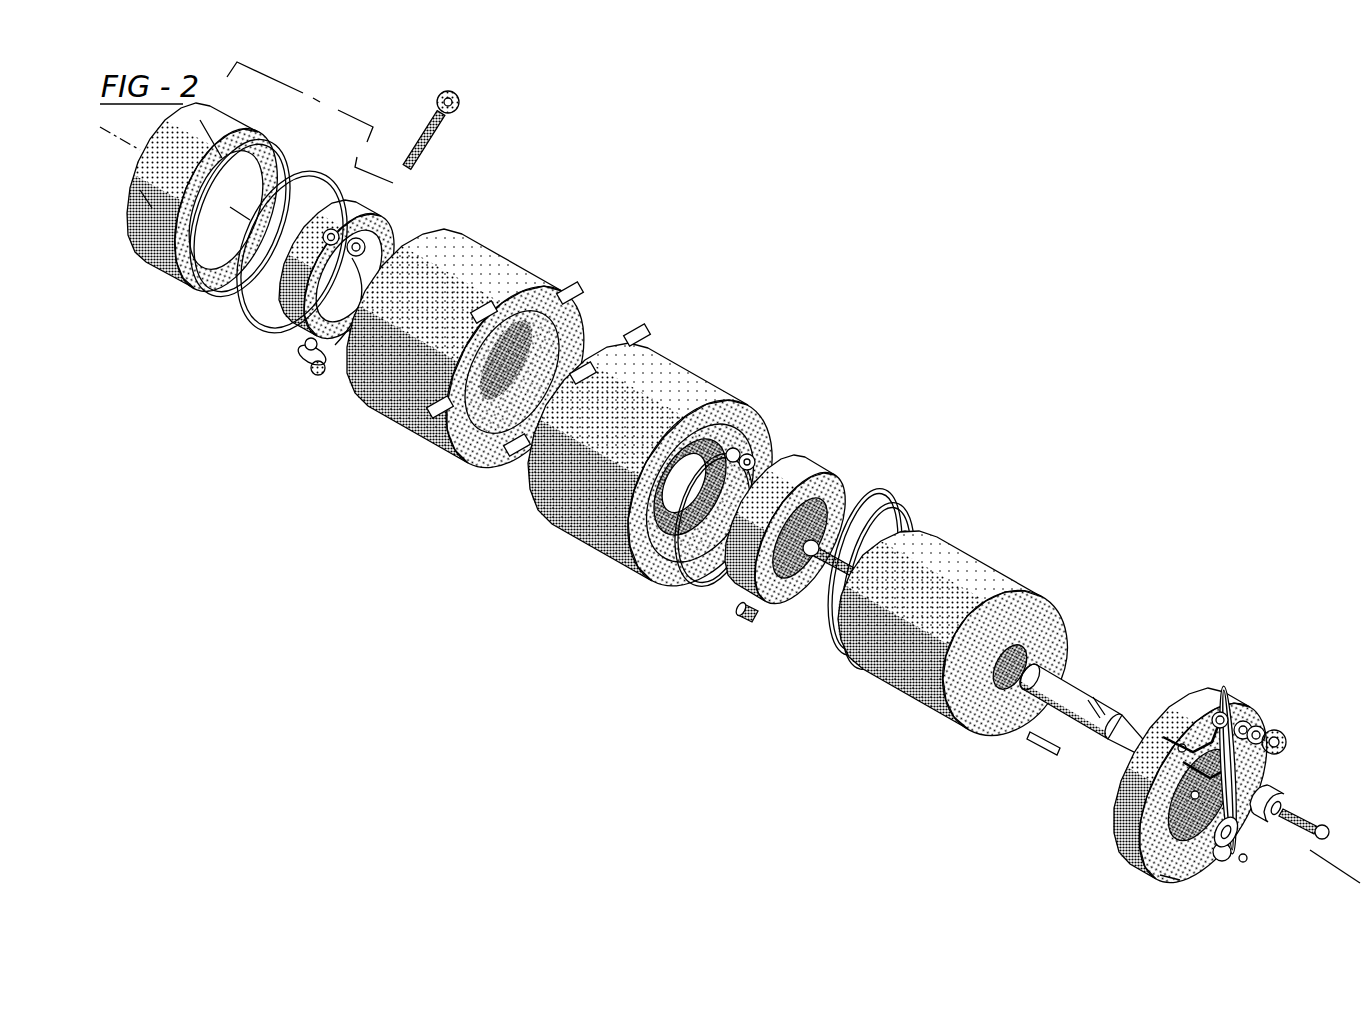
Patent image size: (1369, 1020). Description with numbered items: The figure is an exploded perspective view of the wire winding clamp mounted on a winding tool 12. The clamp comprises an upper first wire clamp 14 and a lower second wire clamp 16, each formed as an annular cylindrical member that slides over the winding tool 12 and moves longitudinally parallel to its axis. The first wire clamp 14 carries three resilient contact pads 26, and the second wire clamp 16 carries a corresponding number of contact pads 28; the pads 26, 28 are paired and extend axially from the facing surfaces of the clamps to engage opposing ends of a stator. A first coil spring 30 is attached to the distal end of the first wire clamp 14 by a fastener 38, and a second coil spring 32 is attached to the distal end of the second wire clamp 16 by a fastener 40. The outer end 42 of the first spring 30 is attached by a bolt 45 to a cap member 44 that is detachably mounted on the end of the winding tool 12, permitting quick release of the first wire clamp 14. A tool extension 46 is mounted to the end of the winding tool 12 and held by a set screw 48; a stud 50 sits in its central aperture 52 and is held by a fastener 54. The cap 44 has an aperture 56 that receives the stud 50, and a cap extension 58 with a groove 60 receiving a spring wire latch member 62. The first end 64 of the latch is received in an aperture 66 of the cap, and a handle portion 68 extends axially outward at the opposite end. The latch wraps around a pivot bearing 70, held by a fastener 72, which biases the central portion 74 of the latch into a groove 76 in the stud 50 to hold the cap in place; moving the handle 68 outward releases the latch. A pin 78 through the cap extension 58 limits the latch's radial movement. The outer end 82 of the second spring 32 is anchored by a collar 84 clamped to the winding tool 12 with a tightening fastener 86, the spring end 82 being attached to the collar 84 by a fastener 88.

The winding tool 12 is at (812, 492).
The first wire clamp 14 is at (593, 548).
The second wire clamp 16 is at (522, 270).
The contact pads 26 is at (590, 362).
The contact pads 28 is at (566, 288).
The first coil spring 30 is at (829, 642).
The second coil spring 32 is at (302, 318).
The fastener 38 is at (753, 462).
The fastener 40 is at (370, 217).
The outer end of first spring 42 is at (908, 514).
The cap member 44 is at (1118, 838).
The bolt 45 is at (936, 530).
The tool extension 46 is at (1033, 623).
The set screw 48 is at (748, 620).
The stud 50 is at (1095, 692).
The central aperture 52 is at (1045, 667).
The fastener 54 is at (866, 530).
The aperture 56 is at (1234, 820).
The cap extension 58 is at (1173, 737).
The groove 60 is at (1165, 791).
The spring wire latch member 62 is at (1233, 686).
The first end of latch member 64 is at (1197, 710).
The aperture 66 is at (1170, 770).
The handle portion 68 is at (1140, 870).
The pivot bearing 70 is at (1281, 784).
The fastener 72 is at (1308, 822).
The central portion of latch member 74 is at (1258, 767).
The groove 76 is at (1112, 700).
The pin 78 is at (1246, 858).
The outer end of second spring 82 is at (236, 300).
The collar 84 is at (242, 113).
The tightening fastener 86 is at (440, 136).
The fastener 88 is at (322, 374).